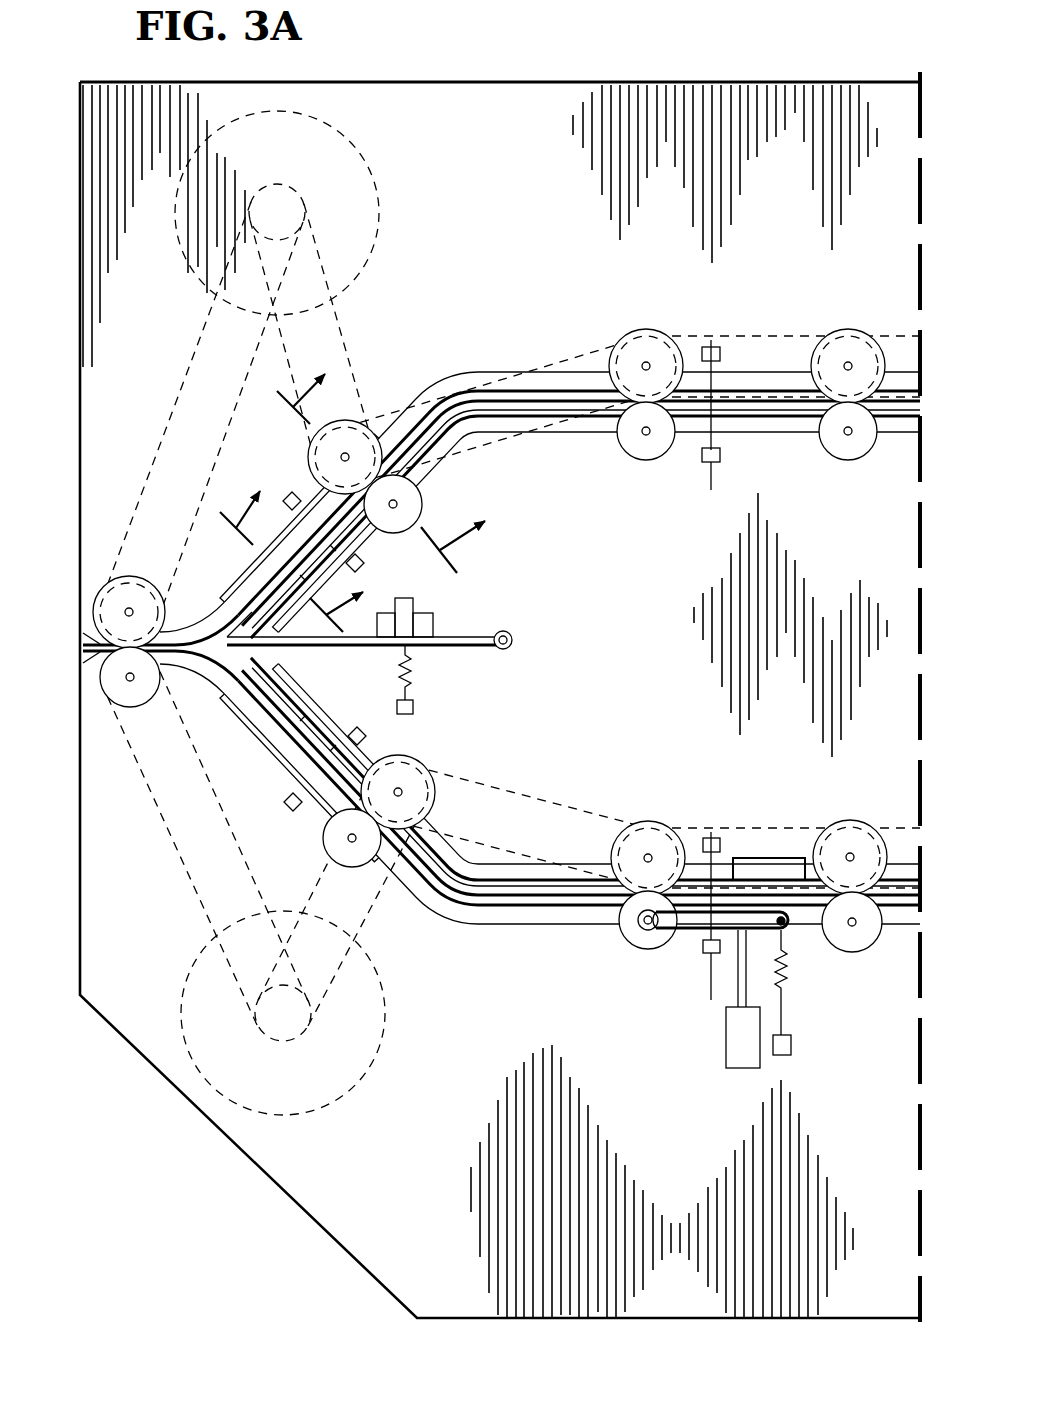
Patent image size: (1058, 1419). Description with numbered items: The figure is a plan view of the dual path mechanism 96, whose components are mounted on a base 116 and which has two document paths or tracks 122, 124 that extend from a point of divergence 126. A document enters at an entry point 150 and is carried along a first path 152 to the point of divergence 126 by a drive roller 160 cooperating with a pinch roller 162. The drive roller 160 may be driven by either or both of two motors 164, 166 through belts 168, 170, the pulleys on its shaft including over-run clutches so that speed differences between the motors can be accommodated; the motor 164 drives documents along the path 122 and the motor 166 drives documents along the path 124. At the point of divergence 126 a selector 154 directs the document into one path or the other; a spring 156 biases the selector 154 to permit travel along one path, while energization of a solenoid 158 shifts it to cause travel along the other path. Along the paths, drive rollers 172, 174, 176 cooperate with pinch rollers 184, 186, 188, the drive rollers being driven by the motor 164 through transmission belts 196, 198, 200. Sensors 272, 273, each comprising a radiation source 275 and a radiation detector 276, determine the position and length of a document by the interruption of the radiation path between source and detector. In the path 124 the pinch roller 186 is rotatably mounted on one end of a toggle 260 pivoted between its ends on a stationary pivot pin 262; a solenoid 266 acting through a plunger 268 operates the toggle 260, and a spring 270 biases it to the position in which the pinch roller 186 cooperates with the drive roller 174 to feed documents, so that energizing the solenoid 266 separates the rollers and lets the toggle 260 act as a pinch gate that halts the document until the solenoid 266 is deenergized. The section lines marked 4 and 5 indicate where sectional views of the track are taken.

The dual path mechanism 96 is at (716, 58).
The base 116 is at (365, 1236).
The path 122 is at (457, 366).
The path 124 is at (450, 930).
The point of divergence 126 is at (193, 612).
The entry point 150 is at (70, 654).
The first path 152 is at (166, 672).
The selector 154 is at (262, 660).
The spring 156 is at (412, 677).
The solenoid 158 is at (412, 607).
The drive roller 160 is at (97, 592).
The pinch roller 162 is at (112, 700).
The motor 164 is at (367, 148).
The motor 166 is at (362, 1090).
The belt 168 is at (197, 333).
The belt 170 is at (200, 890).
The drive roller 172 is at (345, 440).
The drive roller 174 is at (630, 340).
The drive roller 176 is at (855, 333).
The pinch roller 184 is at (420, 495).
The pinch roller 186 is at (636, 452).
The pinch roller 188 is at (848, 452).
The belt 196 is at (350, 360).
The belt 198 is at (548, 350).
The belt 200 is at (787, 335).
The toggle 260 is at (697, 938).
The pivot pin 262 is at (688, 927).
The solenoid 266 is at (738, 1052).
The plunger 268 is at (746, 980).
The spring 270 is at (790, 980).
The sensor 272 is at (283, 515).
The sensor 273 is at (698, 347).
The radiation source 275 is at (713, 345).
The radiation detector 276 is at (364, 566).
The section line 4 is at (299, 548).
The section line 5 is at (388, 455).